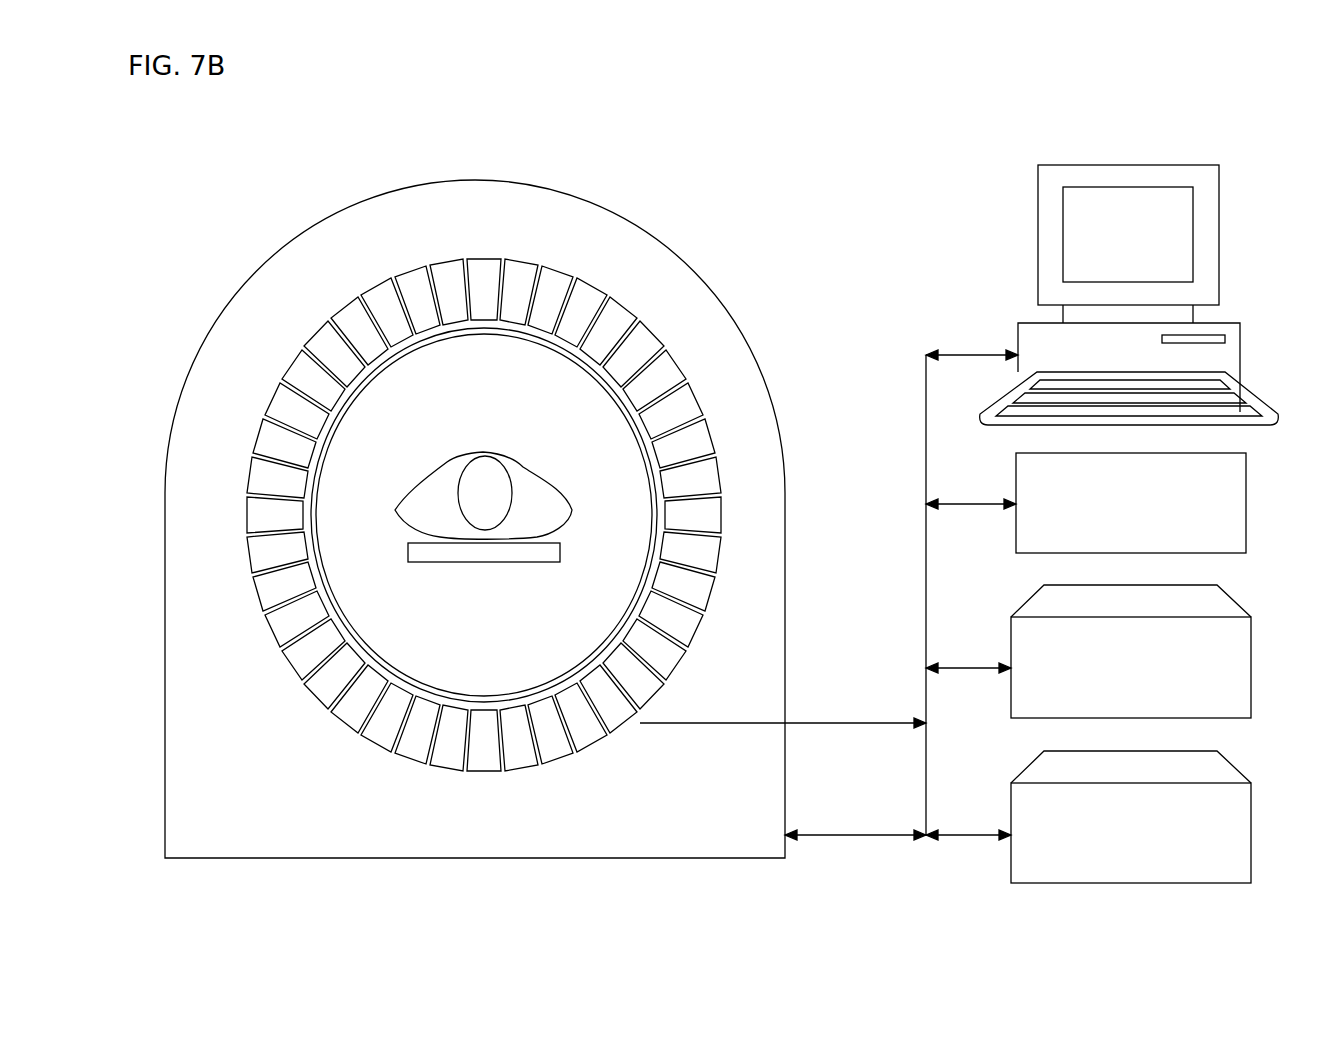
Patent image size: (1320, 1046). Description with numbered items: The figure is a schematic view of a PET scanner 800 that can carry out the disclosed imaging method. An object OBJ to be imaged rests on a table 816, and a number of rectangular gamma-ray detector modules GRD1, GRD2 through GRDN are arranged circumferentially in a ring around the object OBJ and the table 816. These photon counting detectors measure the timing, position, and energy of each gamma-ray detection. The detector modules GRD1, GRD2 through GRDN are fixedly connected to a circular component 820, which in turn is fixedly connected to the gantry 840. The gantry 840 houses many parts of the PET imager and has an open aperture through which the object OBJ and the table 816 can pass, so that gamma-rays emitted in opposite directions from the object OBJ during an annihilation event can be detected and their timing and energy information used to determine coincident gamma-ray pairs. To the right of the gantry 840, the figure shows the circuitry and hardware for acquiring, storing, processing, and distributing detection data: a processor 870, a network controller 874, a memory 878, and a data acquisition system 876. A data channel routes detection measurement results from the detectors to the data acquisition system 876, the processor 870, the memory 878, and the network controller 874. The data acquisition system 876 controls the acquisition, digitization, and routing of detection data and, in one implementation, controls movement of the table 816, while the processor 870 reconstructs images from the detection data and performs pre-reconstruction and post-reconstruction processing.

The PET scanner 800 is at (806, 108).
The gantry 840 is at (714, 300).
The circular component 820 is at (472, 451).
The table 816 is at (455, 563).
The processor 870 is at (1129, 295).
The network controller 874 is at (1131, 503).
The memory 878 is at (1131, 651).
The data acquisition system 876 is at (1131, 817).
The gamma-ray detector GRD1 is at (487, 258).
The gamma-ray detector GRD2 is at (525, 262).
The gamma-ray detector GRDN is at (438, 260).
The object OBJ is at (458, 463).